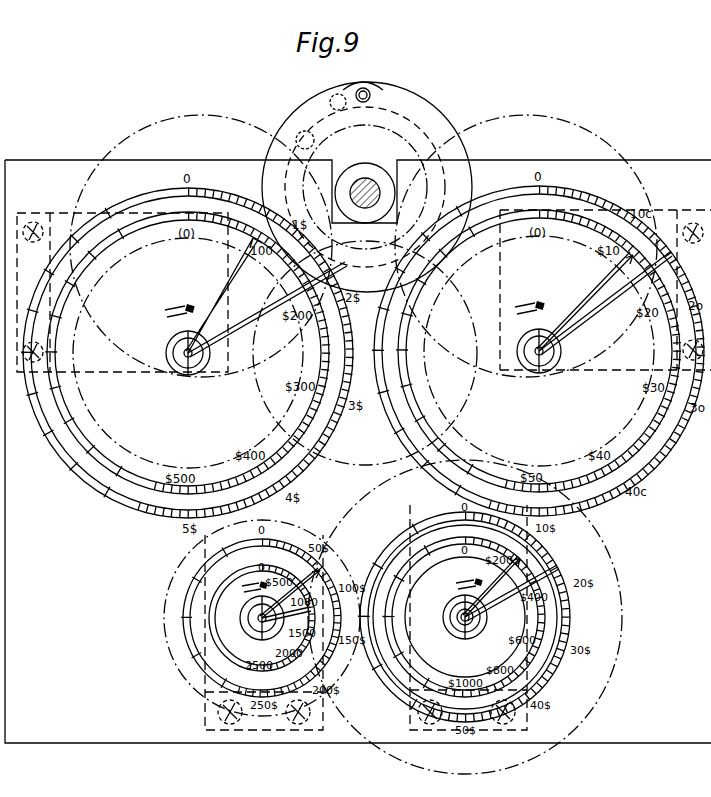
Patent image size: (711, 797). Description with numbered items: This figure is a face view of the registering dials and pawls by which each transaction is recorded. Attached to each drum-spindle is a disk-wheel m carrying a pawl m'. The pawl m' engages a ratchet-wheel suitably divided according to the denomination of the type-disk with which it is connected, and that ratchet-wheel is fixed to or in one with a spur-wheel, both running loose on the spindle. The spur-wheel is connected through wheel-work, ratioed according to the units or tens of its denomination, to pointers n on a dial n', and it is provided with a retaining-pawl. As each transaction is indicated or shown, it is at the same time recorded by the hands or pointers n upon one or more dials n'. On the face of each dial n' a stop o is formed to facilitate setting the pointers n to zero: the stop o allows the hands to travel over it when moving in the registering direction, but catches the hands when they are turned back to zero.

The disk-wheel m is at (367, 187).
The pawl m' is at (365, 169).
The pointers n is at (429, 435).
The dial n' is at (443, 441).
The stop o is at (351, 457).